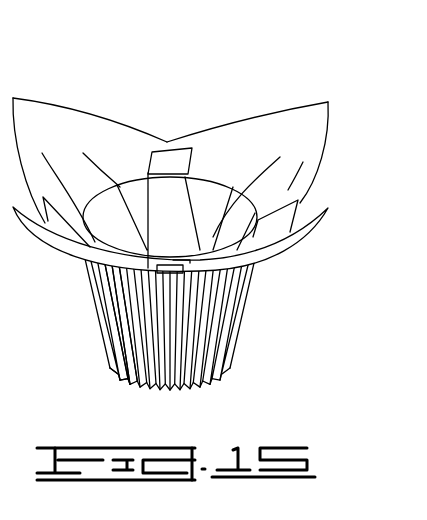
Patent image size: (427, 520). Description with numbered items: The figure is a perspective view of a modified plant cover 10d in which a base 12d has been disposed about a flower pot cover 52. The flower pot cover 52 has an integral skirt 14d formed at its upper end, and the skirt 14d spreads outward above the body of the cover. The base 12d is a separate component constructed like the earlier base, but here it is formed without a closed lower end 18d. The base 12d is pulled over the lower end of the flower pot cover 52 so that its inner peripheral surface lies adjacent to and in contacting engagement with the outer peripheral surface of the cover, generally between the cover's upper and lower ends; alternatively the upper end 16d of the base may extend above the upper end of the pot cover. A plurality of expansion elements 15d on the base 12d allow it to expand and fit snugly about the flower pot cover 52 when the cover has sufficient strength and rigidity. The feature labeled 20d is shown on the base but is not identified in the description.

The modified plant cover 10d is at (181, 223).
The base 12d is at (176, 332).
The skirt 14d is at (268, 108).
The expansion elements 15d is at (204, 367).
The upper end of the base 16d is at (147, 273).
The closed lower end 18d is at (125, 377).
The pleat 20d is at (120, 340).
The flower pot cover 52 is at (113, 118).